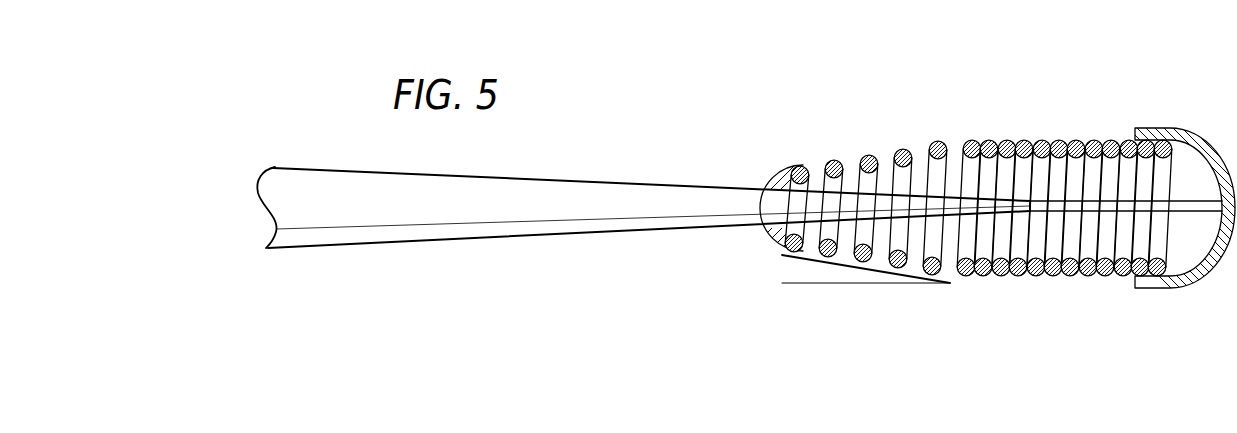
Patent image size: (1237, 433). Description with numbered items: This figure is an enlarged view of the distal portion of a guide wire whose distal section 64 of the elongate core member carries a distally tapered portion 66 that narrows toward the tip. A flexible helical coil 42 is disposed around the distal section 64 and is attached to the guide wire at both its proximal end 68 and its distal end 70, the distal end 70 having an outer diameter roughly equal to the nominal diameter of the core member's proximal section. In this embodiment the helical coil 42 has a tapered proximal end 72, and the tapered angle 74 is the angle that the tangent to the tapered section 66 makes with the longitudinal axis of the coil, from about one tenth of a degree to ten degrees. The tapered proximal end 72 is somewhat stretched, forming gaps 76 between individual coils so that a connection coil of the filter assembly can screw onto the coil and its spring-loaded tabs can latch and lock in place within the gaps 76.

The distal section 64 is at (691, 88).
The distally tapered portion 66 is at (474, 235).
The proximal end 68 is at (799, 167).
The distal end 70 is at (1157, 275).
The tapered proximal end 72 is at (846, 279).
The tapered angle 74 is at (816, 228).
The gaps 76 is at (967, 139).
The helical coil 42 is at (1068, 143).